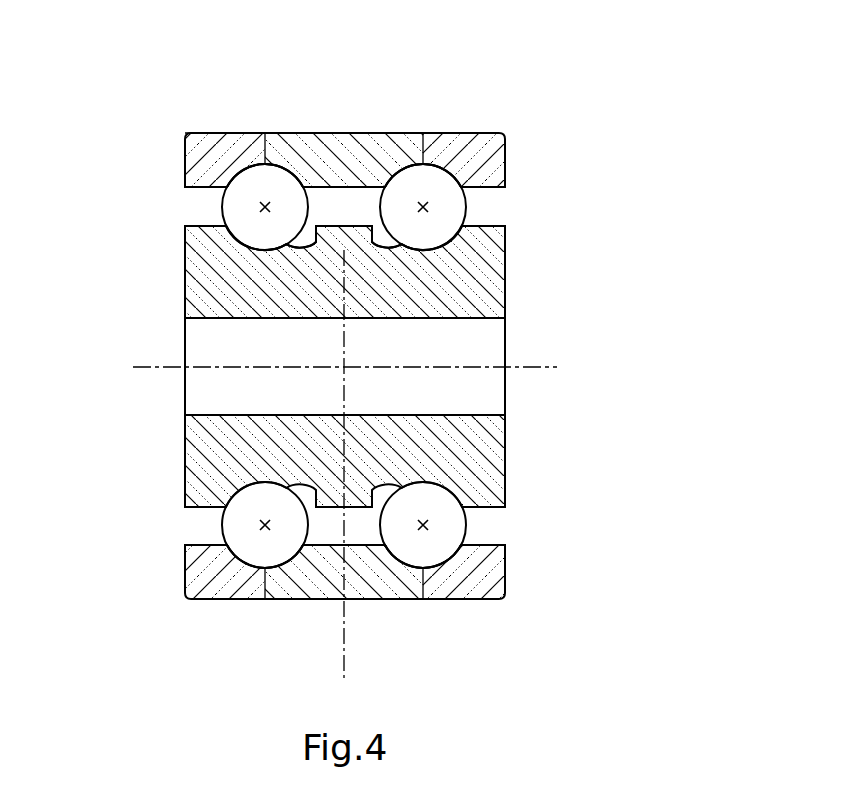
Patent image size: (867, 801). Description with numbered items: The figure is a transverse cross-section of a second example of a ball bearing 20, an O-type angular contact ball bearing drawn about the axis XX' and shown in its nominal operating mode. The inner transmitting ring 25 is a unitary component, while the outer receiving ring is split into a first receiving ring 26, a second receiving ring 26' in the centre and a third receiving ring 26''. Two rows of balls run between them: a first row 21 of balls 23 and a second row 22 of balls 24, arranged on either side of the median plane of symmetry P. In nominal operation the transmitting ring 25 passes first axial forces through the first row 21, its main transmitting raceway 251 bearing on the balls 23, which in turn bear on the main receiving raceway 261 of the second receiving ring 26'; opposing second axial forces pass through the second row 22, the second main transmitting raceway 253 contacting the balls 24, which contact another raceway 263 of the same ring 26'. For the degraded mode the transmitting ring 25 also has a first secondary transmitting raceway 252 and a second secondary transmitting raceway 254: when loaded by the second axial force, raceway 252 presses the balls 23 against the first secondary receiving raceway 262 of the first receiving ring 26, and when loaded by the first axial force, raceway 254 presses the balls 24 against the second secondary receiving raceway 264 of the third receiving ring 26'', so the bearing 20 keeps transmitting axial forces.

The ball bearing 20 is at (560, 138).
The first row of balls 21 is at (398, 563).
The second row of balls 22 is at (292, 563).
The rolling element (ball) of first row 23 is at (440, 502).
The balls of the second row 24 is at (252, 505).
The transmitting ring 25 is at (505, 279).
The main transmitting raceway 251 is at (485, 278).
The first secondary transmitting raceway 252 is at (372, 246).
The second main transmitting raceway 253 is at (243, 246).
The second secondary transmitting raceway 254 is at (316, 246).
The first receiving ring 26 is at (373, 324).
The second receiving ring 26' is at (196, 98).
The third receiving ring 26'' is at (344, 82).
The main receiving raceway 261 is at (388, 160).
The first secondary receiving raceway 262 is at (447, 163).
The another raceway 263 is at (294, 172).
The second secondary receiving raceway 264 is at (243, 163).
The median plane of symmetry P is at (345, 652).
The bearing axis XX' is at (369, 367).